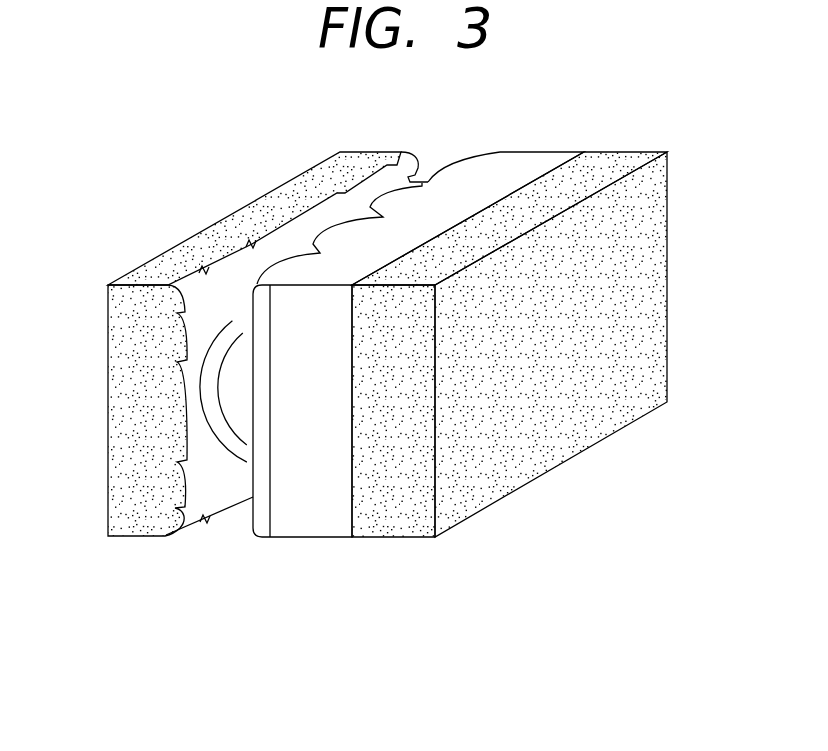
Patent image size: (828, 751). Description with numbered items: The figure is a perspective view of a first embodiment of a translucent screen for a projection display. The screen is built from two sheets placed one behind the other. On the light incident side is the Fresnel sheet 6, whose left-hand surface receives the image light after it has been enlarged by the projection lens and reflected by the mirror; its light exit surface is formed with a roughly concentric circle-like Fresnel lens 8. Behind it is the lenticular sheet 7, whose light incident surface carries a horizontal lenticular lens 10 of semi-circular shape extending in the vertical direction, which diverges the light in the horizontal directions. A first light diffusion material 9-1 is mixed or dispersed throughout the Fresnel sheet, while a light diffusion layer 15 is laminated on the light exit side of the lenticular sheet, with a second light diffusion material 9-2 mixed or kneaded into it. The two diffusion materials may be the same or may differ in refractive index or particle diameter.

The Fresnel sheet 6 is at (123, 473).
The lenticular sheet 7 is at (505, 165).
The Fresnel lens 8 is at (183, 530).
The first light diffusion material 9-1 is at (280, 202).
The second light diffusion material 9-2 is at (653, 257).
The horizontal lenticular lens 10 is at (422, 181).
The light diffusion layer 15 is at (598, 168).